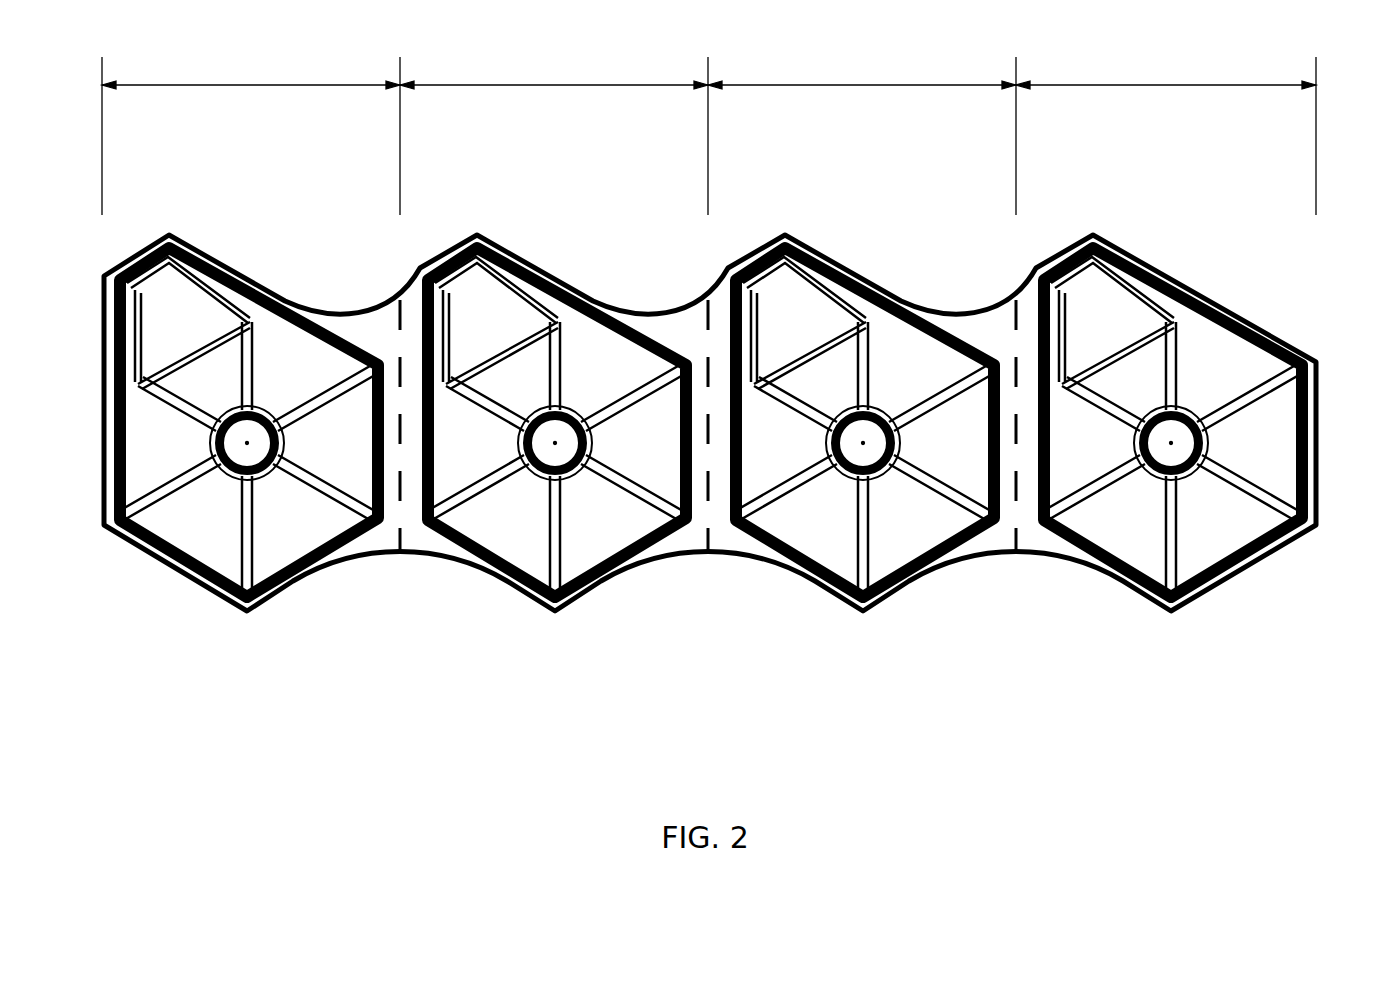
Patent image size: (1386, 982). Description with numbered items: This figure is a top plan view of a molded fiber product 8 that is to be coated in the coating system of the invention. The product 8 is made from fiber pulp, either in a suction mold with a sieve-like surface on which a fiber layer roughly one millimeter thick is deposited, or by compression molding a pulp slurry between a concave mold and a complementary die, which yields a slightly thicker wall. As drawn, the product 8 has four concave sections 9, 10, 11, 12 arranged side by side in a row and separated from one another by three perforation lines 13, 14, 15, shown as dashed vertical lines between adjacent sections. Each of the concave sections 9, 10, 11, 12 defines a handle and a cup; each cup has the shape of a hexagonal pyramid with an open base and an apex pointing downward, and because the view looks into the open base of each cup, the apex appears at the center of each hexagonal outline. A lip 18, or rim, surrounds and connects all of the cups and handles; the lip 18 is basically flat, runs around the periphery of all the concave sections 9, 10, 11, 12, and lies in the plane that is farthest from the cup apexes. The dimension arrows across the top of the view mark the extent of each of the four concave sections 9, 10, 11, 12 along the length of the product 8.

The product 8 is at (1288, 567).
The concave section 9 is at (251, 119).
The concave section 10 is at (554, 119).
The concave section 11 is at (862, 119).
The concave section 12 is at (1166, 119).
The perforation line 13 is at (402, 483).
The perforation line 14 is at (710, 483).
The perforation line 15 is at (1018, 483).
The lip 18 is at (298, 303).